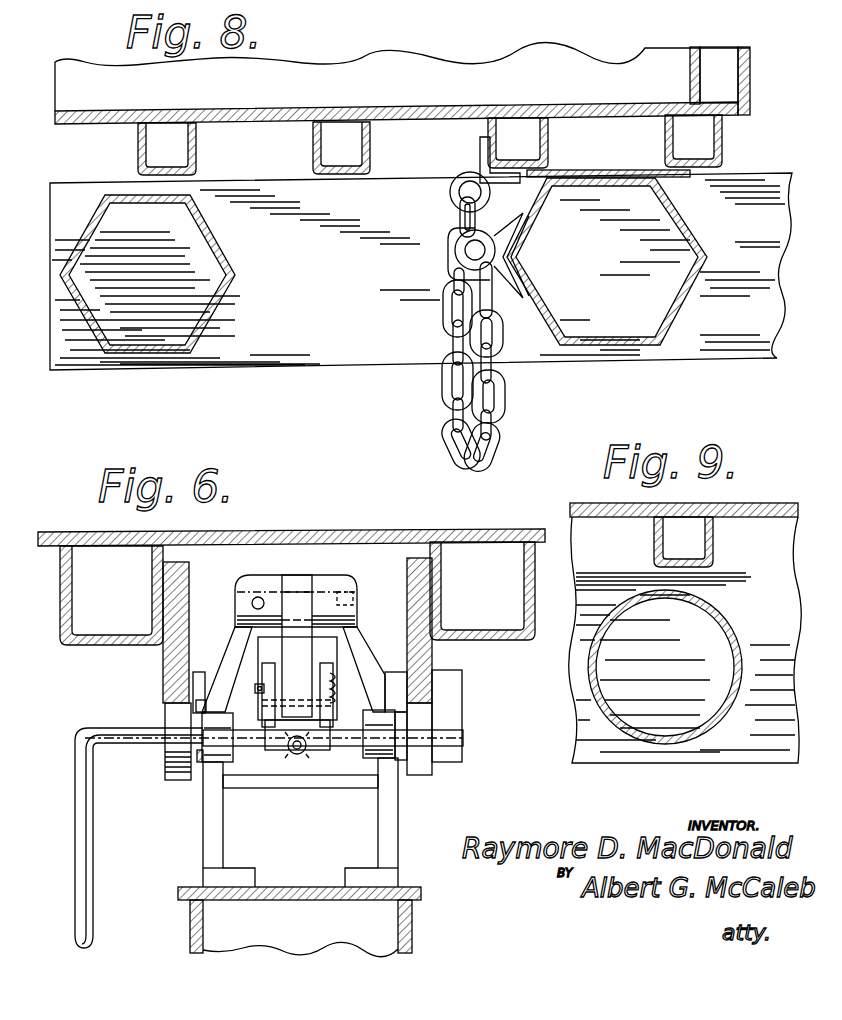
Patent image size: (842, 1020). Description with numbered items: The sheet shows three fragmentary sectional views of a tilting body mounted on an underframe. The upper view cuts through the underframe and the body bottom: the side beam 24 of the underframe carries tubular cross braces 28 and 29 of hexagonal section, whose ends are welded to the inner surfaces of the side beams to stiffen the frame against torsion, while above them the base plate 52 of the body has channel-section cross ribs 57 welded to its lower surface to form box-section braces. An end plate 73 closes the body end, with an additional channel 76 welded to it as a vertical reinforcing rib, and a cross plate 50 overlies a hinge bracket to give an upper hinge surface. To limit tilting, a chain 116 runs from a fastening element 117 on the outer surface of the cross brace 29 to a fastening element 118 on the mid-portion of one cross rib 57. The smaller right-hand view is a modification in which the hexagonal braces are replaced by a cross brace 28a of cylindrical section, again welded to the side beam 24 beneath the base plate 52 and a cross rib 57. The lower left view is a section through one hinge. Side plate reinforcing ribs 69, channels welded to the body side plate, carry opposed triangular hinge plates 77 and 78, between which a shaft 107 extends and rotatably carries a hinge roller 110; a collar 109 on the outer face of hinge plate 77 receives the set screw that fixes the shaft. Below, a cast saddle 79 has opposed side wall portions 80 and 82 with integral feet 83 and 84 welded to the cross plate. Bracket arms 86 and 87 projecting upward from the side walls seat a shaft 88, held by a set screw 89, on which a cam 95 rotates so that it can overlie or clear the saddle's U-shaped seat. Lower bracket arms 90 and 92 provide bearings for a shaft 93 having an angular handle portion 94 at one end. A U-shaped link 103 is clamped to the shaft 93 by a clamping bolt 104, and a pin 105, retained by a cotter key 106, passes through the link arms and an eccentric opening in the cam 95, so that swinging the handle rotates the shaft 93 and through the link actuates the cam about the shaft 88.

In FIG. 8, the side beam 24 is at (375, 355).
In FIG. 9, the side beam 24 is at (724, 763).
In FIG. 8, the cross brace 28 is at (235, 283).
In FIG. 9, the cross brace of cylindrical section 28a is at (725, 618).
In FIG. 8, the cross brace 29 is at (695, 230).
In FIG. 8, the cross plate 50 is at (603, 178).
In FIG. 8, the base plate 52 is at (405, 110).
In FIG. 9, the base plate 52 is at (738, 503).
In FIG. 8, the cross rib 57 is at (196, 150).
In FIG. 9, the cross rib 57 is at (713, 545).
In FIG. 6, the side plate reinforcing rib 69 is at (72, 650).
In FIG. 8, the end plate 73 is at (751, 73).
In FIG. 8, the channel 76 is at (688, 58).
In FIG. 6, the hinge plate 77 is at (432, 660).
In FIG. 6, the hinge plate 78 is at (163, 668).
In FIG. 6, the saddle 79 is at (398, 808).
In FIG. 6, the side wall portion 80 is at (398, 840).
In FIG. 6, the side wall portion 82 is at (203, 840).
In FIG. 6, the foot 83 is at (352, 870).
In FIG. 6, the foot 84 is at (245, 876).
In FIG. 6, the bracket arm 86 is at (340, 577).
In FIG. 6, the bracket arm 87 is at (258, 577).
In FIG. 6, the shaft 88 is at (358, 602).
In FIG. 6, the set screw 89 is at (252, 601).
In FIG. 6, the bracket arm 90 is at (380, 758).
In FIG. 6, the bracket arm 92 is at (212, 757).
In FIG. 6, the shaft 93 is at (140, 748).
In FIG. 6, the handle portion 94 is at (93, 897).
In FIG. 6, the cam 95 is at (292, 575).
In FIG. 6, the U-shaped link 103 is at (325, 720).
In FIG. 6, the clamping bolt 104 is at (313, 760).
In FIG. 6, the pin 105 is at (338, 680).
In FIG. 6, the cotter key 106 is at (256, 692).
In FIG. 6, the shaft 107 is at (199, 672).
In FIG. 6, the collar 109 is at (462, 712).
In FIG. 6, the hinge roller 110 is at (195, 704).
In FIG. 8, the chain 116 is at (507, 400).
In FIG. 8, the fastening element 117 is at (456, 252).
In FIG. 8, the fastening element 118 is at (450, 195).